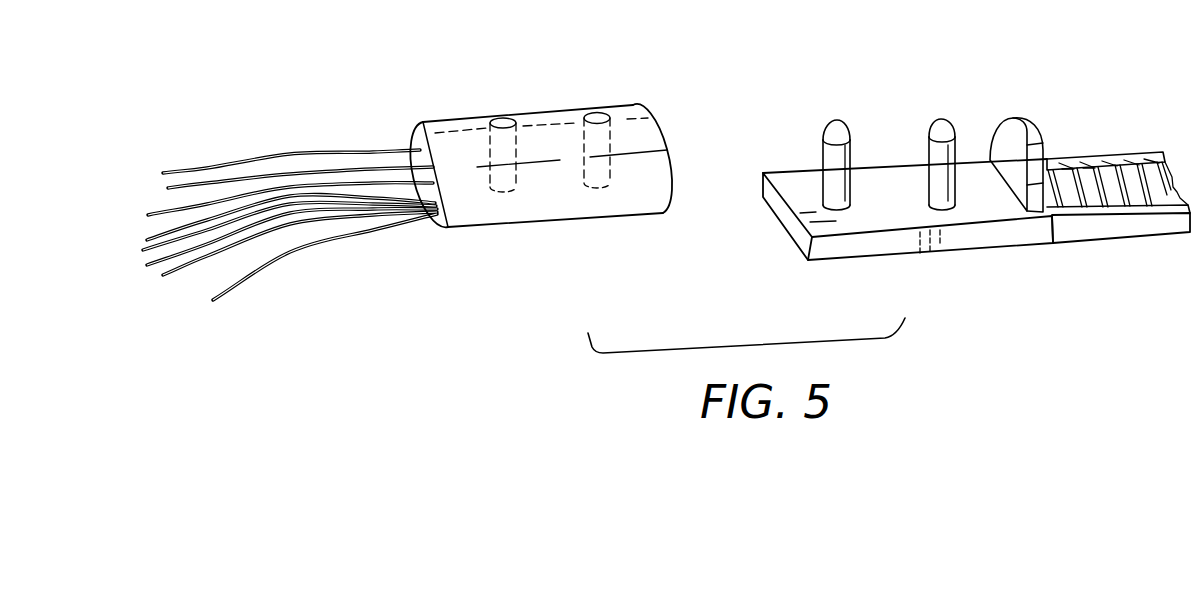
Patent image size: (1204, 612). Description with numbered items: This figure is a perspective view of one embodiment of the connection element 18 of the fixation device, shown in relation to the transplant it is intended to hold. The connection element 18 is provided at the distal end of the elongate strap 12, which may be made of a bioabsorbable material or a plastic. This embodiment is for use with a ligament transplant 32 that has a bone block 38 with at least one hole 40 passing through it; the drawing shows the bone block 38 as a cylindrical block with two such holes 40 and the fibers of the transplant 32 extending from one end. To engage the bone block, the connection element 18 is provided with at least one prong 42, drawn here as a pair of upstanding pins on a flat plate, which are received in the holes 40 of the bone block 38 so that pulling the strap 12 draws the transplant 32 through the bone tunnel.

The elongate strap 12 is at (1137, 233).
The connection element 18 is at (985, 235).
The ligament transplant 32 is at (283, 173).
The bone block 38 is at (543, 215).
The hole 40 is at (504, 120).
The prong 42 is at (934, 129).